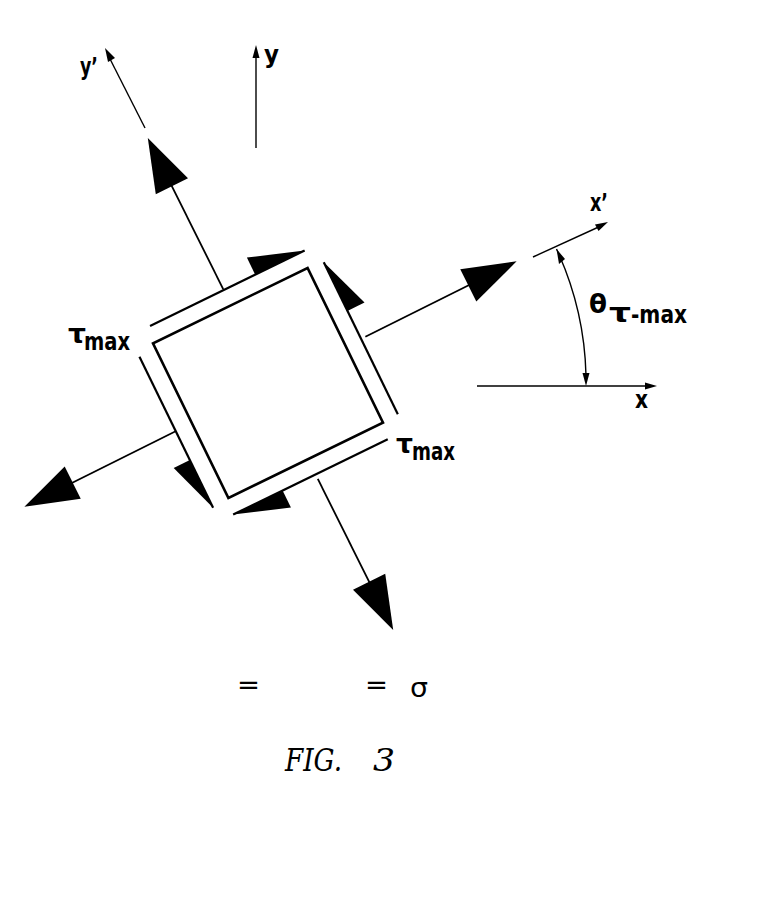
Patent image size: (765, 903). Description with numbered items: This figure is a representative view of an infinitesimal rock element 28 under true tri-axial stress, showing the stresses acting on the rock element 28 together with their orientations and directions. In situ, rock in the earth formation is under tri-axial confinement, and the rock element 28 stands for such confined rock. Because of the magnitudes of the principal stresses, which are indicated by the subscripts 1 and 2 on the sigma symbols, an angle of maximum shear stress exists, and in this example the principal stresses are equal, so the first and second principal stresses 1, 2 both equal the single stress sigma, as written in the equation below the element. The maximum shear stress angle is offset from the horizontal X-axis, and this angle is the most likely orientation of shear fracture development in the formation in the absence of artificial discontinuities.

The rock element 28 is at (307, 266).
The principal stress sigma- 1 is at (270, 475).
The principal stress sigma- 2 is at (271, 421).